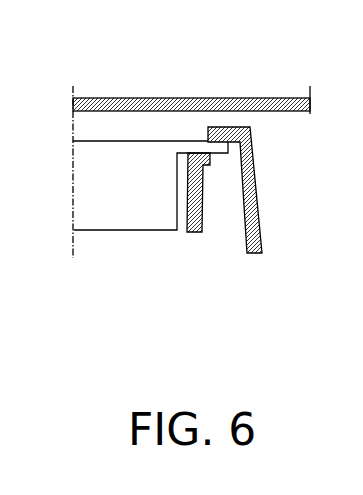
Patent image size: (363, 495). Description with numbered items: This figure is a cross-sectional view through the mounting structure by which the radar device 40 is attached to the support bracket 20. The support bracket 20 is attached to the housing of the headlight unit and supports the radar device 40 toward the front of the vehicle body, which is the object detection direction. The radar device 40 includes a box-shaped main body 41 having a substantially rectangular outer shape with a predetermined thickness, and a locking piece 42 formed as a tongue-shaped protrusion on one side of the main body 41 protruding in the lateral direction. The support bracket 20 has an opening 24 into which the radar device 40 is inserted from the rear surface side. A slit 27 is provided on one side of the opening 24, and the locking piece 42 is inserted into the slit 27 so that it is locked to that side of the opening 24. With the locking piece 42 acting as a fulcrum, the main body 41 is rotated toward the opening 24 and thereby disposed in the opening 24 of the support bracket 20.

The support bracket 20 is at (241, 94).
The opening 24 is at (185, 226).
The slit 27 is at (212, 145).
The radar device 40 is at (128, 234).
The main body 41 is at (150, 199).
The locking piece 42 is at (188, 146).